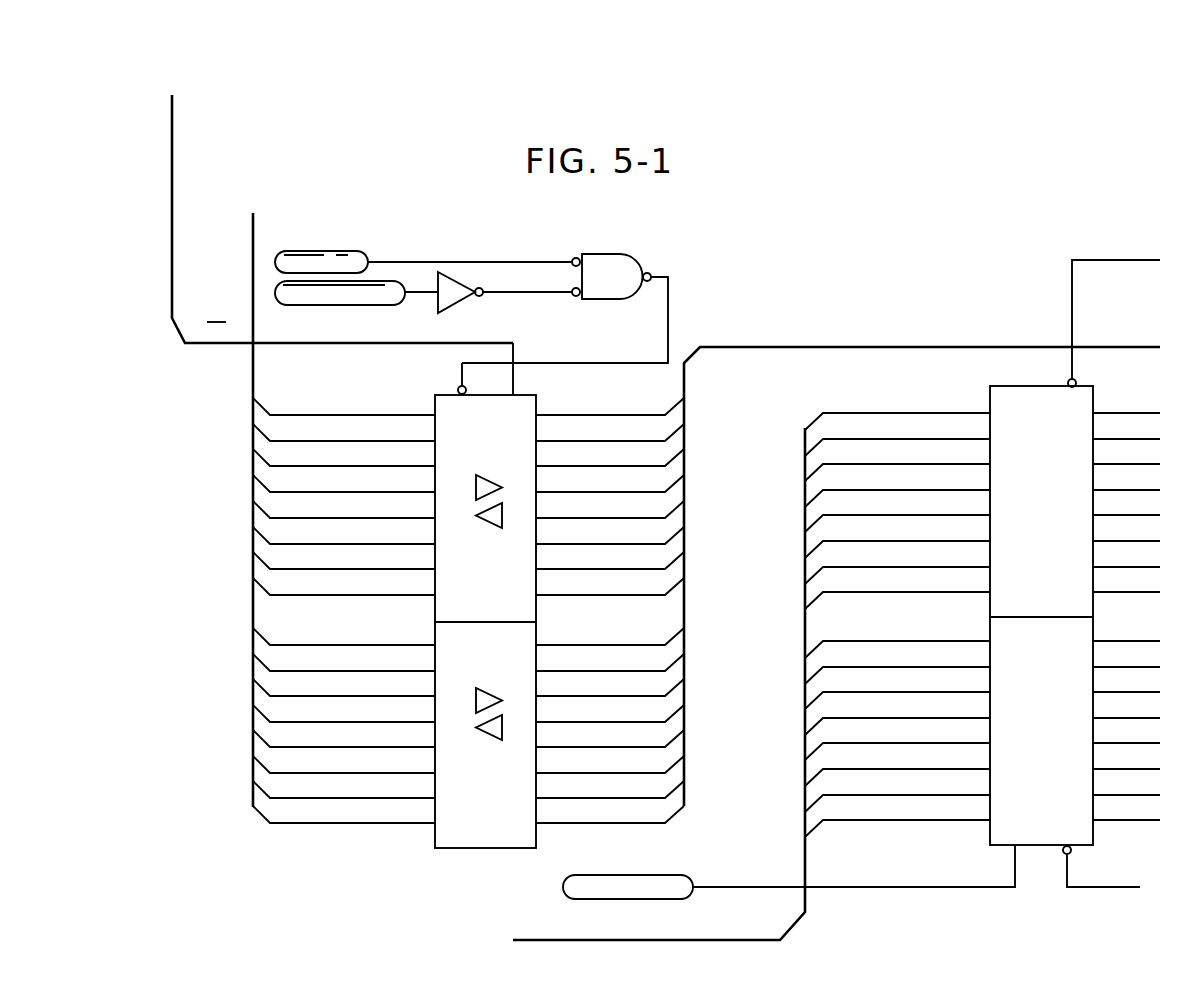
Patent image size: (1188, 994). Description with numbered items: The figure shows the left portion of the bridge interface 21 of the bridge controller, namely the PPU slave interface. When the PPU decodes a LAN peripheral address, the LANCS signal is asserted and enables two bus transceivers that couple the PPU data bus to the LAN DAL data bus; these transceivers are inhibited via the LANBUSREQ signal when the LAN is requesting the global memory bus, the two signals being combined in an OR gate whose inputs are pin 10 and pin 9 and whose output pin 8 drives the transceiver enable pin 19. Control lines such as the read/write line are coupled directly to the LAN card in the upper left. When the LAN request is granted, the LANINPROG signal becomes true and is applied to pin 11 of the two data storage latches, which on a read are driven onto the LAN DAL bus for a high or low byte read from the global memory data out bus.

The bridge interface 21 is at (907, 258).
The OR gate input pin 10 is at (474, 253).
The pin 9 of LS32 switch 9 is at (531, 283).
The pin 8 of lower LS32 chip 8 is at (565, 308).
The transceiver enable pin 19 is at (476, 378).
The pin 11 of LS32 chip 11 is at (791, 872).